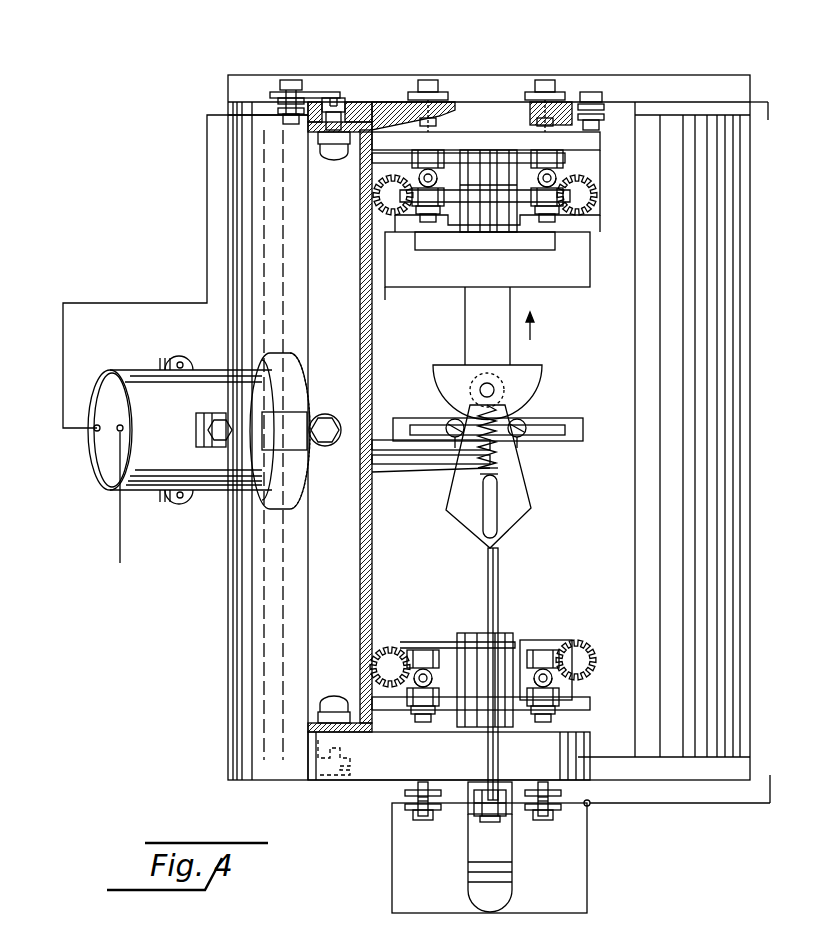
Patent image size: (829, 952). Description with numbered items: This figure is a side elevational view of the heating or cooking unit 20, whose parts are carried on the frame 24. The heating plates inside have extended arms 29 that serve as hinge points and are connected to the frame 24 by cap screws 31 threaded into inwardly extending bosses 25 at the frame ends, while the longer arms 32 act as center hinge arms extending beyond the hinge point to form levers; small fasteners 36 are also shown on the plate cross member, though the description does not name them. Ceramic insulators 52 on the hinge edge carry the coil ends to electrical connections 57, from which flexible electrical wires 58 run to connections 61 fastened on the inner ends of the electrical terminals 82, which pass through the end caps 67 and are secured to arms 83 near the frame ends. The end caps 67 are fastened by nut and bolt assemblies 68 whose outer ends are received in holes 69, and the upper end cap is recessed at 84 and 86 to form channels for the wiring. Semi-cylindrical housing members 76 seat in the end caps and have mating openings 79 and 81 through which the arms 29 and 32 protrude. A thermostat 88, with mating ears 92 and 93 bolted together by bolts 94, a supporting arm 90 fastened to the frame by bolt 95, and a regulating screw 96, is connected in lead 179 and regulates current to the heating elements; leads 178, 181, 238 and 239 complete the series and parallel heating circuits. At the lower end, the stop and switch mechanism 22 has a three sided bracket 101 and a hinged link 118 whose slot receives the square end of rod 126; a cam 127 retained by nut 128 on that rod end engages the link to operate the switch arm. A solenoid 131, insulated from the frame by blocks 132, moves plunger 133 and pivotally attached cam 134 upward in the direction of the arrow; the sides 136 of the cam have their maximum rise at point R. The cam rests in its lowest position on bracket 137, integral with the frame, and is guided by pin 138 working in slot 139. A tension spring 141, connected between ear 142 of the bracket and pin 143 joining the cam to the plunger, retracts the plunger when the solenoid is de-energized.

The heating or cooking unit 20 is at (205, 716).
The stop and switch mechanism 22 is at (518, 862).
The frame 24 is at (340, 431).
The inwardly extending bosses 25 is at (518, 656).
The extended arms 29 is at (490, 212).
The cap screws 31 is at (484, 212).
The longer arms 32 is at (415, 418).
The screw 36 is at (455, 418).
The ceramic insulators 52 is at (560, 176).
The electrical connection 57 is at (570, 218).
The flexible electrical wires 58 is at (378, 200).
The connections 61 is at (420, 172).
The end caps 67 is at (492, 75).
The nut and bolt assemblies 68 is at (336, 153).
The holes 69 is at (352, 98).
The semi-cylindrical housing members 76 is at (228, 598).
The mating openings 79 is at (568, 132).
The mating openings 81 is at (430, 425).
The electrical terminals 82 is at (428, 78).
The arms 83 is at (462, 150).
The recess 84 is at (332, 75).
The recess 86 is at (565, 78).
The thermostat 88 is at (128, 366).
The integral supporting arm 90 is at (300, 420).
The mating ears 92 is at (188, 362).
The mating ears 93 is at (165, 360).
The bolts 94 is at (181, 356).
The bolt 95 is at (330, 446).
The regulating screw 96 is at (222, 424).
The three sided bracket 101 is at (508, 782).
The hinged link 118 is at (495, 795).
The rod 126 is at (498, 572).
The cam 127 is at (483, 816).
The nut 128 is at (495, 812).
The solenoid 131 is at (575, 278).
The blocks 132 is at (388, 287).
The plunger 133 is at (465, 328).
The cam 134 is at (516, 518).
The sides of cam 136 is at (456, 476).
The bracket 137 is at (394, 465).
The pin 138 is at (498, 456).
The slot 139 is at (480, 530).
The tension spring 141 is at (516, 408).
The ear 142 is at (498, 472).
The pin 143 is at (487, 383).
The lead 178 is at (774, 102).
The lead 179 is at (207, 130).
The lead 181 is at (587, 832).
The lead 238 is at (680, 816).
The lead 239 is at (97, 432).
The point R is at (446, 510).